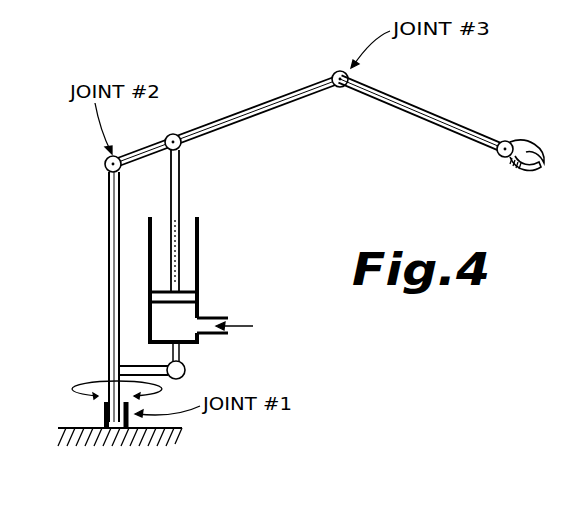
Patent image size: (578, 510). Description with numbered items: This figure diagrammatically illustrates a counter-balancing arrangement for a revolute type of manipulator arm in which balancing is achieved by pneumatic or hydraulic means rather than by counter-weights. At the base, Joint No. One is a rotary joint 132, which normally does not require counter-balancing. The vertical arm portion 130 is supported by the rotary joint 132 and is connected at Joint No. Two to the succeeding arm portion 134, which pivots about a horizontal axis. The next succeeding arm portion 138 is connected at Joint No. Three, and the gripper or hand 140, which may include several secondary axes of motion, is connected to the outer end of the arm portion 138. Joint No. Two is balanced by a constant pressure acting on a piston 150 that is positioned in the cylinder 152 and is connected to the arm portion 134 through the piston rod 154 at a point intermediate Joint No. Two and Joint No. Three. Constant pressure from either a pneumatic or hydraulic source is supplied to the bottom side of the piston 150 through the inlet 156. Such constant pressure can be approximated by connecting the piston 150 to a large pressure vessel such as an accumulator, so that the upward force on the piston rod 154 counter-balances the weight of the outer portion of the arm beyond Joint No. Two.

The vertical arm portion 130 is at (108, 297).
The rotary joint 132 is at (103, 411).
The arm portion 134 is at (250, 108).
The arm portion 138 is at (424, 112).
The gripper or hand 140 is at (508, 141).
The piston 150 is at (185, 294).
The cylinder 152 is at (199, 233).
The piston rod 154 is at (180, 178).
The inlet 156 is at (203, 335).